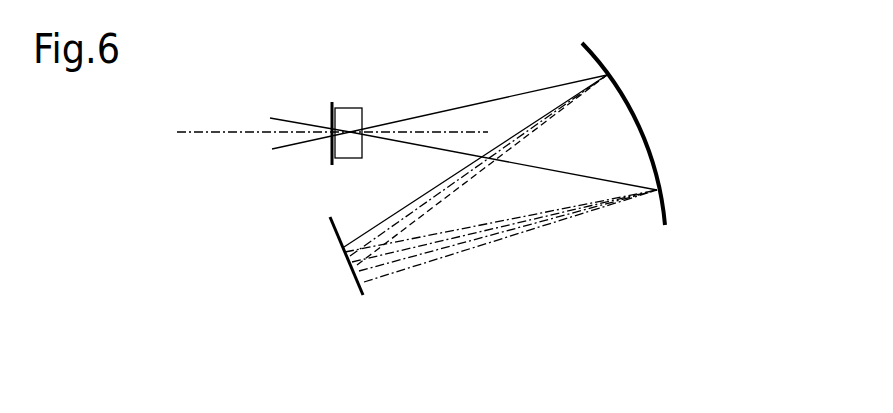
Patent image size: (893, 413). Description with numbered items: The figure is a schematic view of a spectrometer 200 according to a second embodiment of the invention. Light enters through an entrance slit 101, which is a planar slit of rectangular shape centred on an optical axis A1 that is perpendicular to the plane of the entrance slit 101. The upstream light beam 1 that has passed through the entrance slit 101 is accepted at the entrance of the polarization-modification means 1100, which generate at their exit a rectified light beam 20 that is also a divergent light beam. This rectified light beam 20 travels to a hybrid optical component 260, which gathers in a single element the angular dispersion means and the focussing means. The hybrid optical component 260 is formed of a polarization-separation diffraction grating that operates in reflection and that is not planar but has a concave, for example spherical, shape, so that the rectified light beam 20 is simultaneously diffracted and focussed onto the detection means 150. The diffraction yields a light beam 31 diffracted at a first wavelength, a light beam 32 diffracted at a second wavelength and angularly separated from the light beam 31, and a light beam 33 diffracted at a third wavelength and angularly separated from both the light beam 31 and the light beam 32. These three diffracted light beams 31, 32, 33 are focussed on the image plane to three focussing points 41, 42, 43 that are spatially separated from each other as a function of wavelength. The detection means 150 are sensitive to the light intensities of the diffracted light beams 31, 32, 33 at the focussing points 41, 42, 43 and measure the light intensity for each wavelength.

The upstream light beam 1 is at (287, 125).
The polarization-modification means 1100 is at (350, 107).
The entrance slit 101 is at (327, 160).
The optical axis A1 is at (205, 132).
The rectified light beam 20 is at (513, 107).
The hybrid optical component 260 is at (631, 107).
The detection means 150 is at (357, 287).
The focussing point 41 is at (345, 248).
The focussing point 42 is at (348, 256).
The focussing point 43 is at (358, 265).
The light beam diffracted at the wavelength λ1 31 is at (437, 185).
The light beam diffracted at the wavelength λ2 32 is at (483, 153).
The light beam diffracted at the wavelength λ3 33 is at (413, 220).
The spectrometer 200 is at (668, 278).